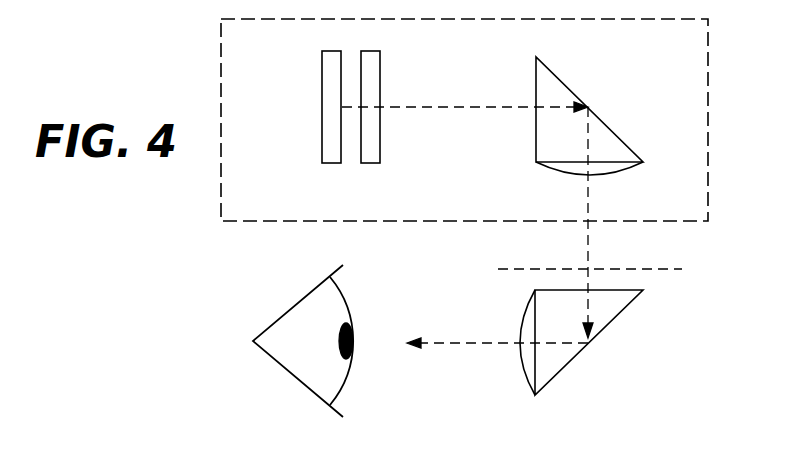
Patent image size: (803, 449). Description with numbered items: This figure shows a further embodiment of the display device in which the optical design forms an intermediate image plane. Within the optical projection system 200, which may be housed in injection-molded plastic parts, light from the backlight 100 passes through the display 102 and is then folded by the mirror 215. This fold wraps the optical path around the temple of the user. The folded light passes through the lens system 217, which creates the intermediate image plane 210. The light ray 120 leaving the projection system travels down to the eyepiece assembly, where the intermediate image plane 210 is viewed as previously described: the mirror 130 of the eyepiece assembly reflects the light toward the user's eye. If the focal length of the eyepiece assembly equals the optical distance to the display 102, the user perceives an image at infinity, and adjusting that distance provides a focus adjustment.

The backlight 100 is at (322, 63).
The display 102 is at (370, 163).
The optical projection system 200 is at (464, 120).
The mirror 215 is at (560, 77).
The lens system 217 is at (607, 175).
The light ray 120 is at (588, 241).
The intermediate image plane 210 is at (650, 270).
The mirror 130 is at (607, 325).